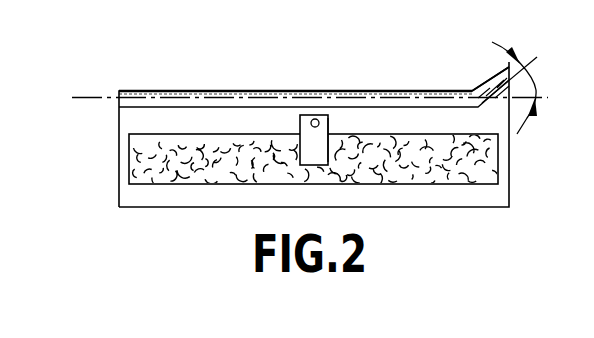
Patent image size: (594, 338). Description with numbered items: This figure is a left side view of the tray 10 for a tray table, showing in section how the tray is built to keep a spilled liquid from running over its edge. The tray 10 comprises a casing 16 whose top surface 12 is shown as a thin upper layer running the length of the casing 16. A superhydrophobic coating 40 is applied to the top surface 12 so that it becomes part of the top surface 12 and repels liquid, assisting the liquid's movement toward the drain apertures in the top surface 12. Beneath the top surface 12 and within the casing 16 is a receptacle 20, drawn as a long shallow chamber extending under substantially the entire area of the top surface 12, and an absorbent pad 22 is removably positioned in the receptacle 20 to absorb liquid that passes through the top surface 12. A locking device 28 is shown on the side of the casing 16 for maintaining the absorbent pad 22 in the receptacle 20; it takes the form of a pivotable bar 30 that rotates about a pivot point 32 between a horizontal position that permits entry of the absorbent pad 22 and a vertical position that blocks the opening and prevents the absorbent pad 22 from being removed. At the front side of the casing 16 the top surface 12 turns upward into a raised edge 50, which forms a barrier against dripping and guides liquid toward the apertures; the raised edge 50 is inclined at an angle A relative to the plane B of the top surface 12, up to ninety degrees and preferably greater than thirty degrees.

The tray 10 is at (104, 131).
The top surface 12 is at (378, 89).
The casing 16 is at (488, 82).
The receptacle 20 is at (136, 164).
The absorbent pad 22 is at (486, 150).
The locking device 28 is at (298, 123).
The pivotable bar 30 is at (330, 133).
The pivot point 32 is at (313, 119).
The superhydrophobic coating 40 is at (417, 95).
The raised edge 50 is at (502, 80).
The angle A is at (534, 68).
The plane B is at (97, 97).